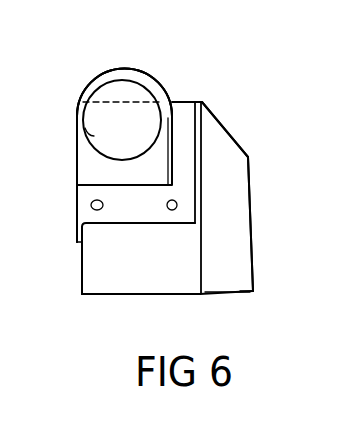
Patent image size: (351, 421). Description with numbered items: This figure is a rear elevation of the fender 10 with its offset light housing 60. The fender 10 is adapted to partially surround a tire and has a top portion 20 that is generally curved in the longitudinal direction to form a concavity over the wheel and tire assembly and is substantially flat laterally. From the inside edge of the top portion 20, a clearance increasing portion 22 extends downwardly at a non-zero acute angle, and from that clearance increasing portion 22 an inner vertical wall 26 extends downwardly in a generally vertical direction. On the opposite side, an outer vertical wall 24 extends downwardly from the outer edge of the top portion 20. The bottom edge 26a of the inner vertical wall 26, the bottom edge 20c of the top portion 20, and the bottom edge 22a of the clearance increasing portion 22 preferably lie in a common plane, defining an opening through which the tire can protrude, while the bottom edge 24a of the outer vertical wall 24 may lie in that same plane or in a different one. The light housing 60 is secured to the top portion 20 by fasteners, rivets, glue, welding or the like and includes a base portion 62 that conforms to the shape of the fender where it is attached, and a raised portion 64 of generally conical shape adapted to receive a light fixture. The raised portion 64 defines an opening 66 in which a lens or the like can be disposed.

The fender 10 is at (245, 99).
The top portion 20 is at (172, 263).
The bottom edge of the top portion 20c is at (128, 297).
The clearance increasing portion 22 is at (233, 159).
The bottom edge of the clearance increasing portion 22a is at (229, 295).
The outer vertical wall 24 is at (82, 268).
The bottom edge of the outer vertical wall 24a is at (82, 298).
The inner vertical wall 26 is at (252, 227).
The bottom edge of the inner vertical wall 26a is at (253, 291).
The light housing 60 is at (104, 54).
The base portion 62 is at (82, 198).
The raised portion 64 is at (132, 73).
The opening 66 is at (132, 98).